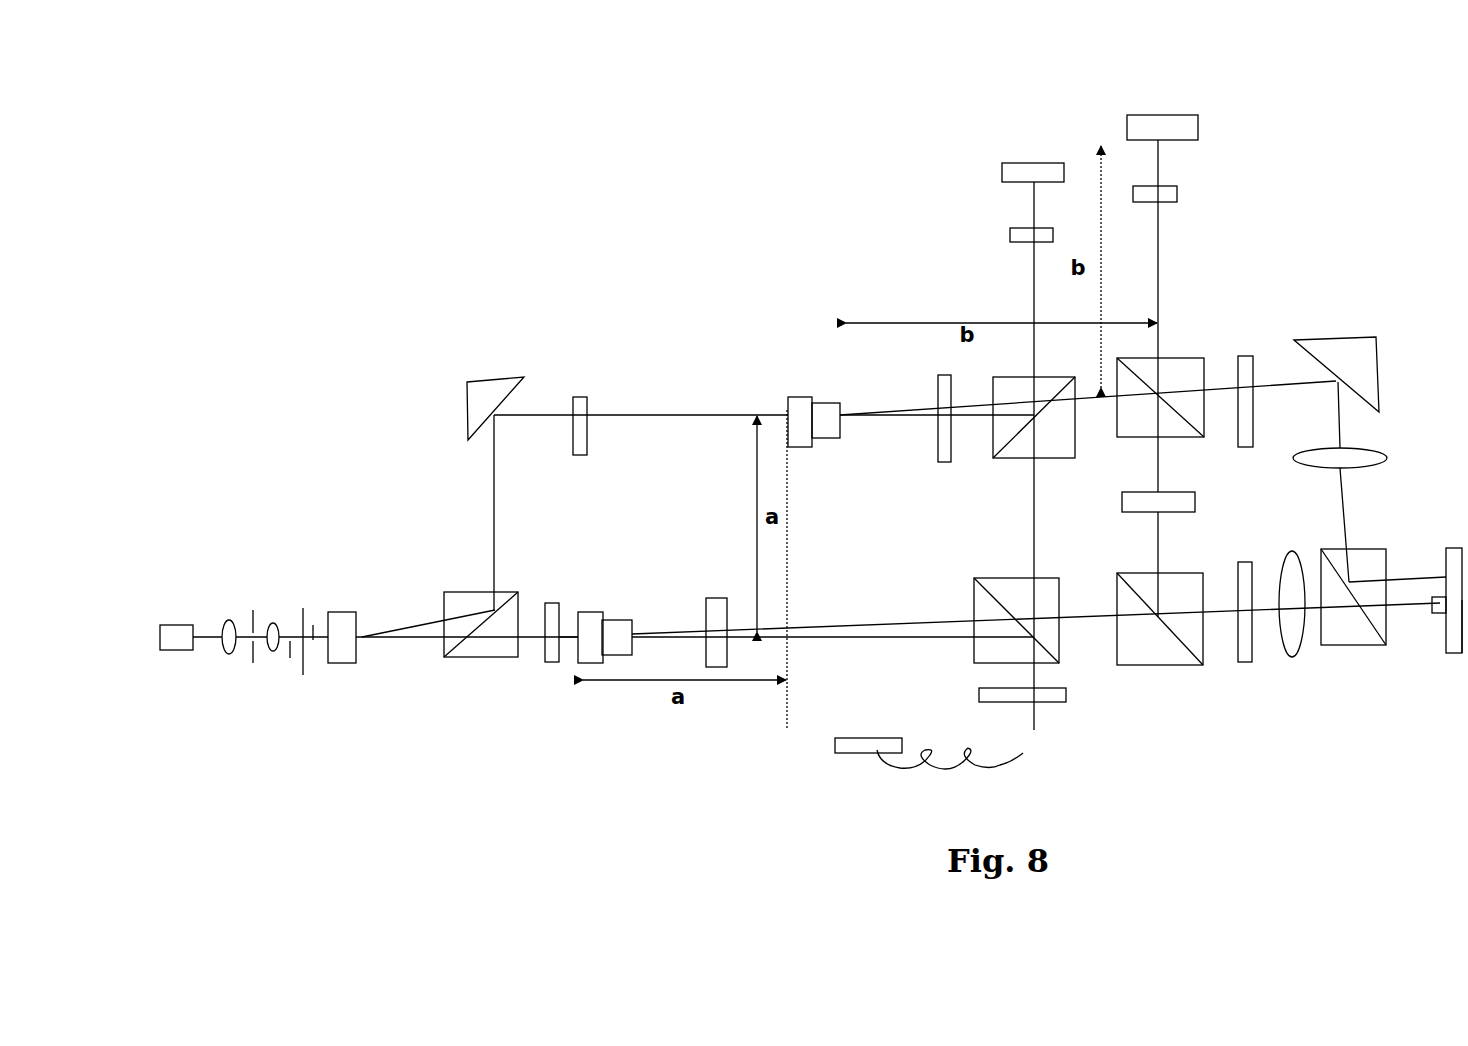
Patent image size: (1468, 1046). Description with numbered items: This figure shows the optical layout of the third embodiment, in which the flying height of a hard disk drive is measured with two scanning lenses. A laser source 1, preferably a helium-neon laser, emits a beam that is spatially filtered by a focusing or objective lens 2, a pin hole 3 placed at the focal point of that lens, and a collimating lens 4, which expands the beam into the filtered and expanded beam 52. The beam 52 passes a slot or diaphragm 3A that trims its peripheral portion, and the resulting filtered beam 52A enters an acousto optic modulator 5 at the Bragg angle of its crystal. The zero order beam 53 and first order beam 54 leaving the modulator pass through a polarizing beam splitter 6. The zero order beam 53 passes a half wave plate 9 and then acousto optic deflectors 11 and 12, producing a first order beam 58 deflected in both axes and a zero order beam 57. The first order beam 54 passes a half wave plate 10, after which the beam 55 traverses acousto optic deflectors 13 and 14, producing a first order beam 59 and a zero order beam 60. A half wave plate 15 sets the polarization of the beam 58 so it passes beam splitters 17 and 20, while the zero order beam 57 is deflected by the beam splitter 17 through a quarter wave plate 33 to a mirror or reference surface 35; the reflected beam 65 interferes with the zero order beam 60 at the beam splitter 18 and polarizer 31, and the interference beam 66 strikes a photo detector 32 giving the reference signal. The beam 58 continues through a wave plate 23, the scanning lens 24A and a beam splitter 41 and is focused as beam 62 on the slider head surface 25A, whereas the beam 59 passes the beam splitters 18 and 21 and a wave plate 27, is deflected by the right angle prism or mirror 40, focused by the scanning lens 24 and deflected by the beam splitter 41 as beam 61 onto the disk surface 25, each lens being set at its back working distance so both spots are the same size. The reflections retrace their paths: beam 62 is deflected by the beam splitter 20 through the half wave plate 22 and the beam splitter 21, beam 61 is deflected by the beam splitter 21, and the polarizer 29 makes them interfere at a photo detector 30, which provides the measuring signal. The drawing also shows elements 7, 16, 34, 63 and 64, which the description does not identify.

The laser source 1 is at (175, 650).
The focusing lens 2 is at (230, 655).
The pin hole 3 is at (253, 610).
The collimating lens 4 is at (274, 622).
The laser beam 52 is at (290, 658).
The slot or diaphragm 3A is at (303, 675).
The filtered beam 52A is at (313, 625).
The acousto optic modulator 5 is at (353, 663).
The beam splitter 6 is at (463, 660).
The zero order beam 53 is at (398, 638).
The first order beam 54 is at (395, 625).
The prism 7 is at (481, 382).
The beam 55 is at (660, 417).
The wave plate 10 is at (580, 457).
The wave plate 9 is at (553, 663).
The acousto optic deflector 11 is at (590, 608).
The acousto optic deflector 12 is at (618, 617).
The wave plate 15 is at (715, 598).
The zero order beam 57 is at (825, 637).
The first order scanning beam 58 is at (832, 625).
The acousto optic deflector 13 is at (793, 396).
The acousto optic deflector 14 is at (820, 402).
The zero order beam 60 is at (887, 413).
The first order scanning beam 59 is at (877, 408).
The wave plate 16 is at (943, 462).
The beam splitter 18 is at (1003, 460).
The wave plate 22 is at (1052, 486).
The reflected beam 65 is at (1035, 528).
The beam splitter 17 is at (1000, 578).
The wave plate 33 is at (1053, 702).
The reference surface 35 is at (853, 753).
The cable 34 is at (985, 775).
The photo detector 32 is at (1022, 163).
The interference beam 66 is at (1035, 212).
The polarizer 31 is at (1012, 233).
The photo detector 30 is at (1133, 115).
The beam 64 is at (1158, 165).
The polarizer 29 is at (1177, 193).
The beam splitter 21 is at (1178, 357).
The beam 63 is at (1158, 470).
The beam splitter 20 is at (1193, 572).
The wave plate 23 is at (1253, 563).
The scanning lens 24A is at (1292, 657).
The beam splitter 41 is at (1363, 562).
The beam 61 is at (1403, 572).
The beam 62 is at (1403, 610).
The disk surface 25 is at (1458, 543).
The slider head surface 25A is at (1448, 645).
The wave plate 27 is at (1249, 355).
The right angle prism or mirror 40 is at (1322, 338).
The scanning lens 24 is at (1378, 452).